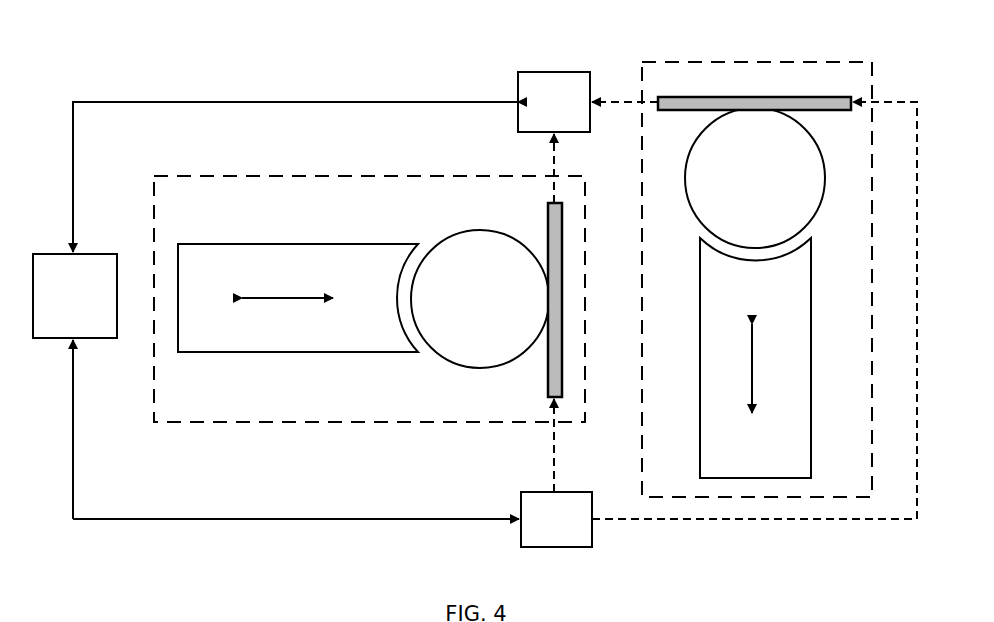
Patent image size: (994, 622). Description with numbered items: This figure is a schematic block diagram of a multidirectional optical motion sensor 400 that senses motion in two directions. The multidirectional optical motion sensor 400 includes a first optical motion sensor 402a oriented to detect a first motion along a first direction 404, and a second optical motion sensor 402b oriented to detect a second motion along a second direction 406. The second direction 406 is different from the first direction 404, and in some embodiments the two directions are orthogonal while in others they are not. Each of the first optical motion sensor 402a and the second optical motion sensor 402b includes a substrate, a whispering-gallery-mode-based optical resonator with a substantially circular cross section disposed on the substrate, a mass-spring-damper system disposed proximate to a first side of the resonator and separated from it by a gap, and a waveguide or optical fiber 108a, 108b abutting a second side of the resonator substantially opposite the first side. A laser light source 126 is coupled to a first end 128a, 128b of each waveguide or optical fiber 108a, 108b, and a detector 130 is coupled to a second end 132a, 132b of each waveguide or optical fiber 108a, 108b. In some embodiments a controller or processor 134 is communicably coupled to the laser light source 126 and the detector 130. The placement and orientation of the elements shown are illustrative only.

The multidirectional optical motion sensor 400 is at (820, 46).
The first optical motion sensor 402a is at (274, 186).
The second optical motion sensor 402b is at (700, 75).
The first direction 404 is at (290, 296).
The second direction 406 is at (750, 380).
The waveguide or optical fiber 108a is at (548, 240).
The waveguide or optical fiber 108b is at (786, 100).
The first end 128a is at (552, 397).
The first end 128b is at (857, 100).
The second end 132a is at (556, 203).
The second end 132b is at (658, 102).
The detector 130 is at (554, 102).
The controller or processor 134 is at (75, 296).
The laser light source 126 is at (556, 519).